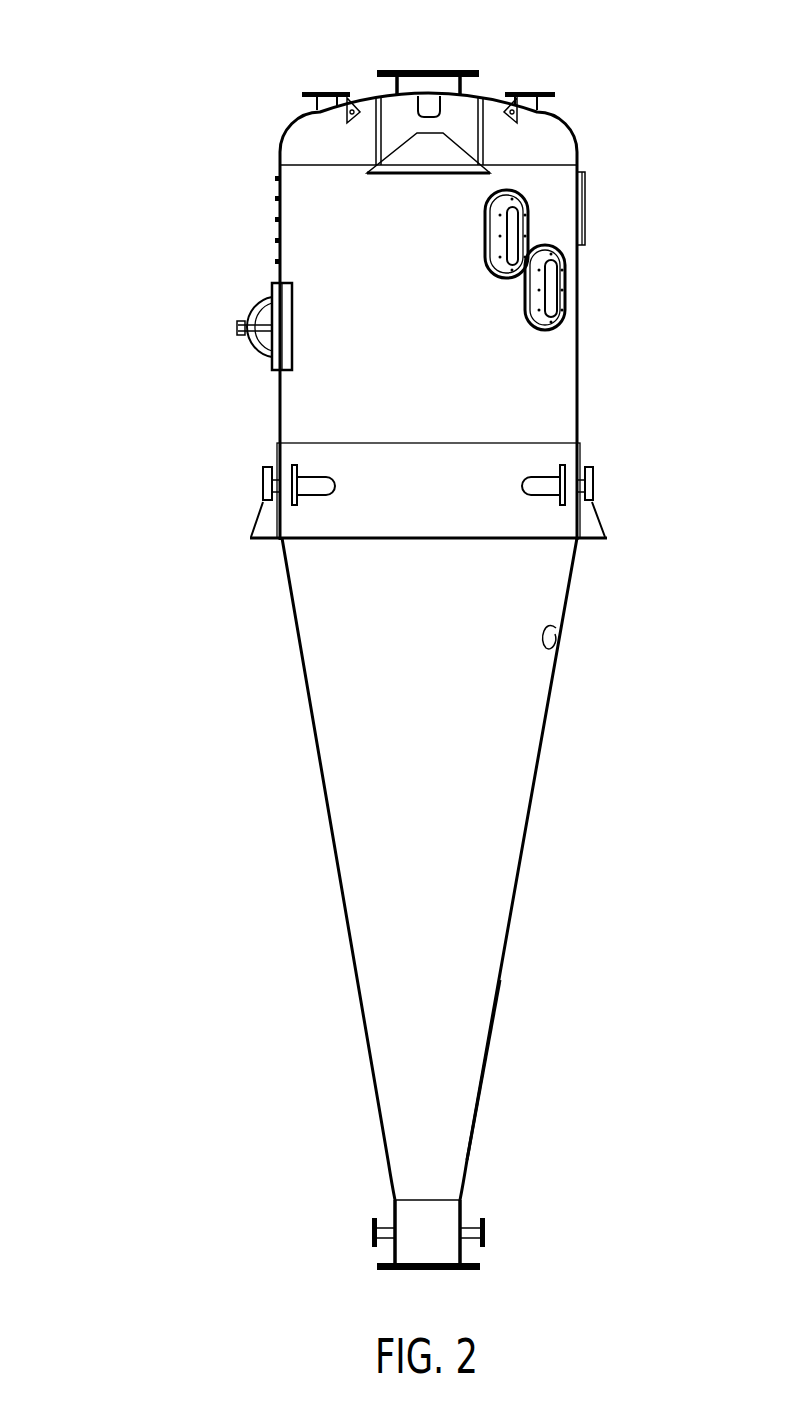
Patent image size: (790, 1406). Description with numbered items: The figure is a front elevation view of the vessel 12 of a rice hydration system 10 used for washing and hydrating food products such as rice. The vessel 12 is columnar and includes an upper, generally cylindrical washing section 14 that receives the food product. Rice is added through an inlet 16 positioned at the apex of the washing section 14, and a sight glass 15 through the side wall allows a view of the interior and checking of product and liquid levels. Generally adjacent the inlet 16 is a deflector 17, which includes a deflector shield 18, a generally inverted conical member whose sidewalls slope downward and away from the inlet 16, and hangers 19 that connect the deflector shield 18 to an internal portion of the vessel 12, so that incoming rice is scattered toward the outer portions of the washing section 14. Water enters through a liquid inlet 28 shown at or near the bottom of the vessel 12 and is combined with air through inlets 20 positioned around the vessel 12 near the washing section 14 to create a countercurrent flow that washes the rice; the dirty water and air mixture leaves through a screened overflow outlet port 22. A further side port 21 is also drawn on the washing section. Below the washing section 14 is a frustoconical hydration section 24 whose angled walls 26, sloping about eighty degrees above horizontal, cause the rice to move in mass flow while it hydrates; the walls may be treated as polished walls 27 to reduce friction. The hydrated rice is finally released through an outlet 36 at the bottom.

The rice hydration system 10 is at (116, 136).
The vessel 12 is at (588, 360).
The washing section 14 is at (578, 270).
The sight glass 15 is at (527, 217).
The inlet 16 is at (455, 70).
The deflector 17 is at (510, 168).
The deflector shield 18 is at (462, 146).
The hangers 19 is at (418, 105).
The air inlets 20 is at (593, 470).
The side viewing port 21 is at (253, 313).
The outlet port 22 is at (585, 205).
The hydration section 24 is at (548, 700).
The angled walls 26 is at (523, 848).
The polished walls 27 is at (556, 628).
The liquid inlet 28 is at (485, 1230).
The outlet 36 is at (447, 1271).